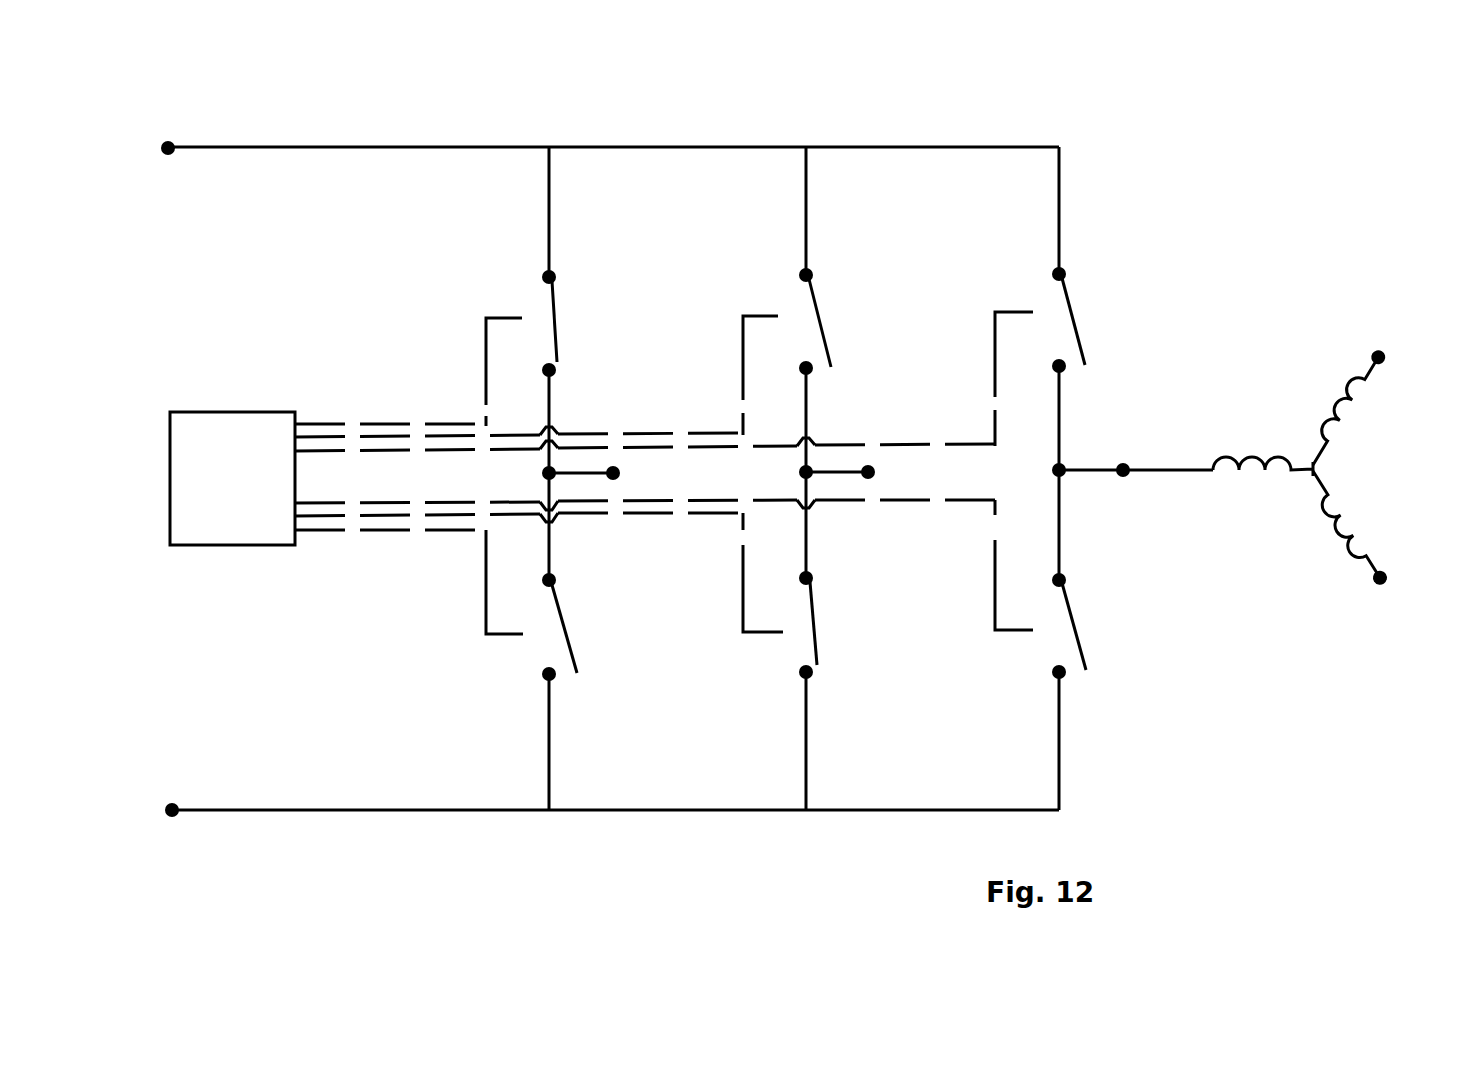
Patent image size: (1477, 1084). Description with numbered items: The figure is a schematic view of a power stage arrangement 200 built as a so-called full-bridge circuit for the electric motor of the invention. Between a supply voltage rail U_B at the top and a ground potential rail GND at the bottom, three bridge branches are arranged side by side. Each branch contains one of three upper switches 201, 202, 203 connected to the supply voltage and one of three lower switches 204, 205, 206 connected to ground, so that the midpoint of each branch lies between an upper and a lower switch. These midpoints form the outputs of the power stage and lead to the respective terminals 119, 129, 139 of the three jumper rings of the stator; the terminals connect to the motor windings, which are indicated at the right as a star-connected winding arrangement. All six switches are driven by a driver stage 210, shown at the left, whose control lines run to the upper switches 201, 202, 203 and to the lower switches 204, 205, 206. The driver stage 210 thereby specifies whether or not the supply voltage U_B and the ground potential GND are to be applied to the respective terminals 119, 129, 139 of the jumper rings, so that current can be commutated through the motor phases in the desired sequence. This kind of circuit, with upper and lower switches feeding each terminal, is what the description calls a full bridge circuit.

The power stage arrangement 200 is at (240, 304).
The driver stage 210 is at (252, 486).
The upper switch 201 is at (565, 302).
The upper switch 202 is at (826, 297).
The upper switch 203 is at (1078, 292).
The lower switch 204 is at (578, 663).
The lower switch 205 is at (820, 651).
The lower switch 206 is at (1085, 649).
The terminal 119 is at (618, 470).
The terminal 129 is at (873, 469).
The terminal 139 is at (1126, 465).